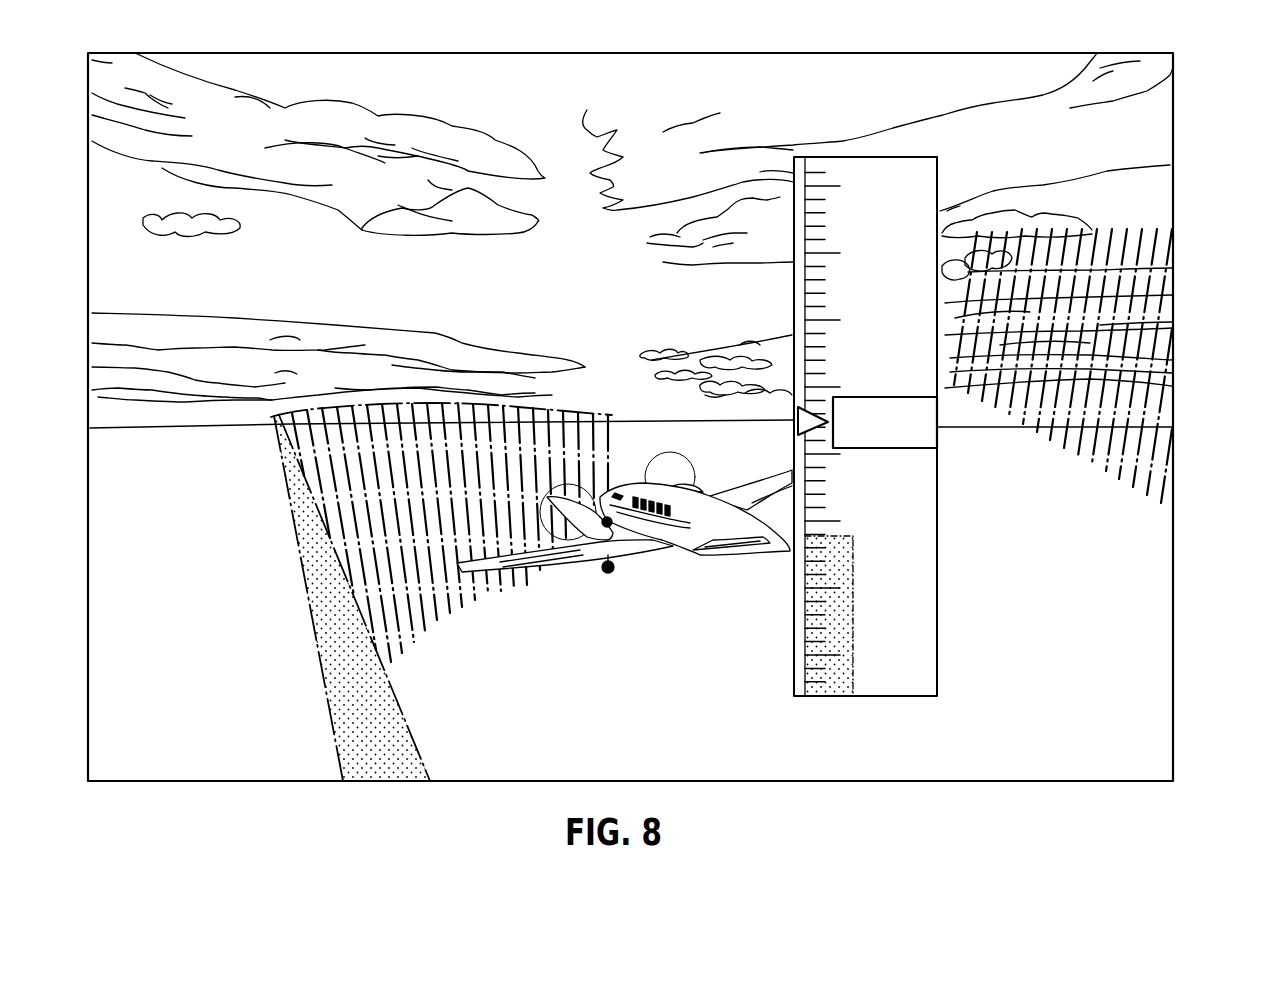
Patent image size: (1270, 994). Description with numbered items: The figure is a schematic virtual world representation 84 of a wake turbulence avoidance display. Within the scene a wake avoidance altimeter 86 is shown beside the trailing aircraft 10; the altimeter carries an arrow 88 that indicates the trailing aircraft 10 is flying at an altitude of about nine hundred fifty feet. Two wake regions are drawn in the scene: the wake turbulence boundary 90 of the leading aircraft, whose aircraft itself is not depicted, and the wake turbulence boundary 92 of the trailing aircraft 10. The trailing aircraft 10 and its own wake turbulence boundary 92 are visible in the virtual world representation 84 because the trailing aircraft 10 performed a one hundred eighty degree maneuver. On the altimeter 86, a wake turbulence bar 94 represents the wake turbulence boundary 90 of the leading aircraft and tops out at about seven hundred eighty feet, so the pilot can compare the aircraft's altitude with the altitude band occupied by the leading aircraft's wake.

The virtual world representation 84 is at (1196, 81).
The wake avoidance altimeter 86 is at (897, 426).
The arrow 88 is at (810, 418).
The wake turbulence boundary 90 is at (318, 628).
The wake turbulence boundary 92 is at (1120, 235).
The wake turbulence bar 94 is at (853, 550).
The trailing aircraft 10 is at (676, 560).